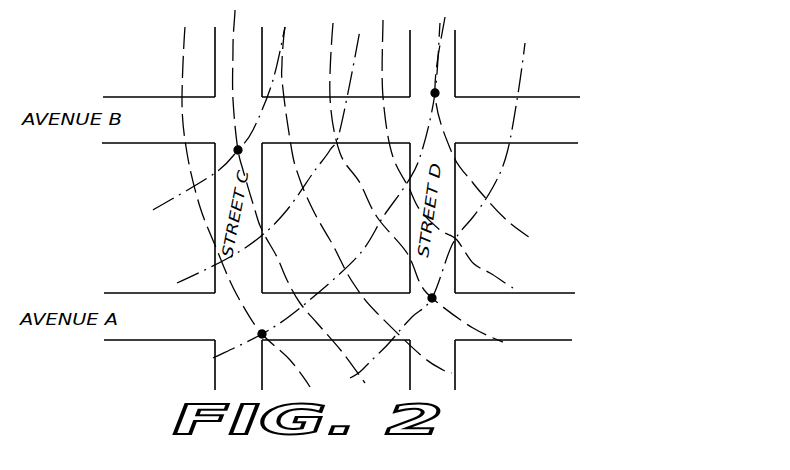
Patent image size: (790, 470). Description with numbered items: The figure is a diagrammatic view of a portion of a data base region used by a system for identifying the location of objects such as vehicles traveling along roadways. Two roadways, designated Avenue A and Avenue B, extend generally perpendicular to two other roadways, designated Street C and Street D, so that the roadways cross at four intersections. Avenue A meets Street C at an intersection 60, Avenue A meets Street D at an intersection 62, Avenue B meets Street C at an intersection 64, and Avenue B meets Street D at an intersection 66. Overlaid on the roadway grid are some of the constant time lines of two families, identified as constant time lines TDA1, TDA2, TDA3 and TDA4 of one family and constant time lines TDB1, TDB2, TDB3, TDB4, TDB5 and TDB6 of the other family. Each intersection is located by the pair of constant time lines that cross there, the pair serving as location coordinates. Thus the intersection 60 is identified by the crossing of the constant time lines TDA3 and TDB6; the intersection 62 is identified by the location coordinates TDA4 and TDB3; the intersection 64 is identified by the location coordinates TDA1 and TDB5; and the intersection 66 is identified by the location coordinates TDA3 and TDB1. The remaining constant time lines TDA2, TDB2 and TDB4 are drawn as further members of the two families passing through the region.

The intersection 60 is at (258, 332).
The intersection 62 is at (428, 300).
The intersection 64 is at (236, 145).
The intersection 66 is at (439, 90).
The constant time line TDA1 is at (172, 202).
The constant time line TDA2 is at (197, 273).
The constant time line TDA3 is at (209, 357).
The constant time line TDA4 is at (352, 372).
The constant time line TDB1 is at (518, 232).
The constant time line TDB2 is at (500, 283).
The constant time line TDB3 is at (482, 332).
The constant time line TDB4 is at (453, 368).
The constant time line TDB5 is at (322, 331).
The constant time line TDB6 is at (273, 348).